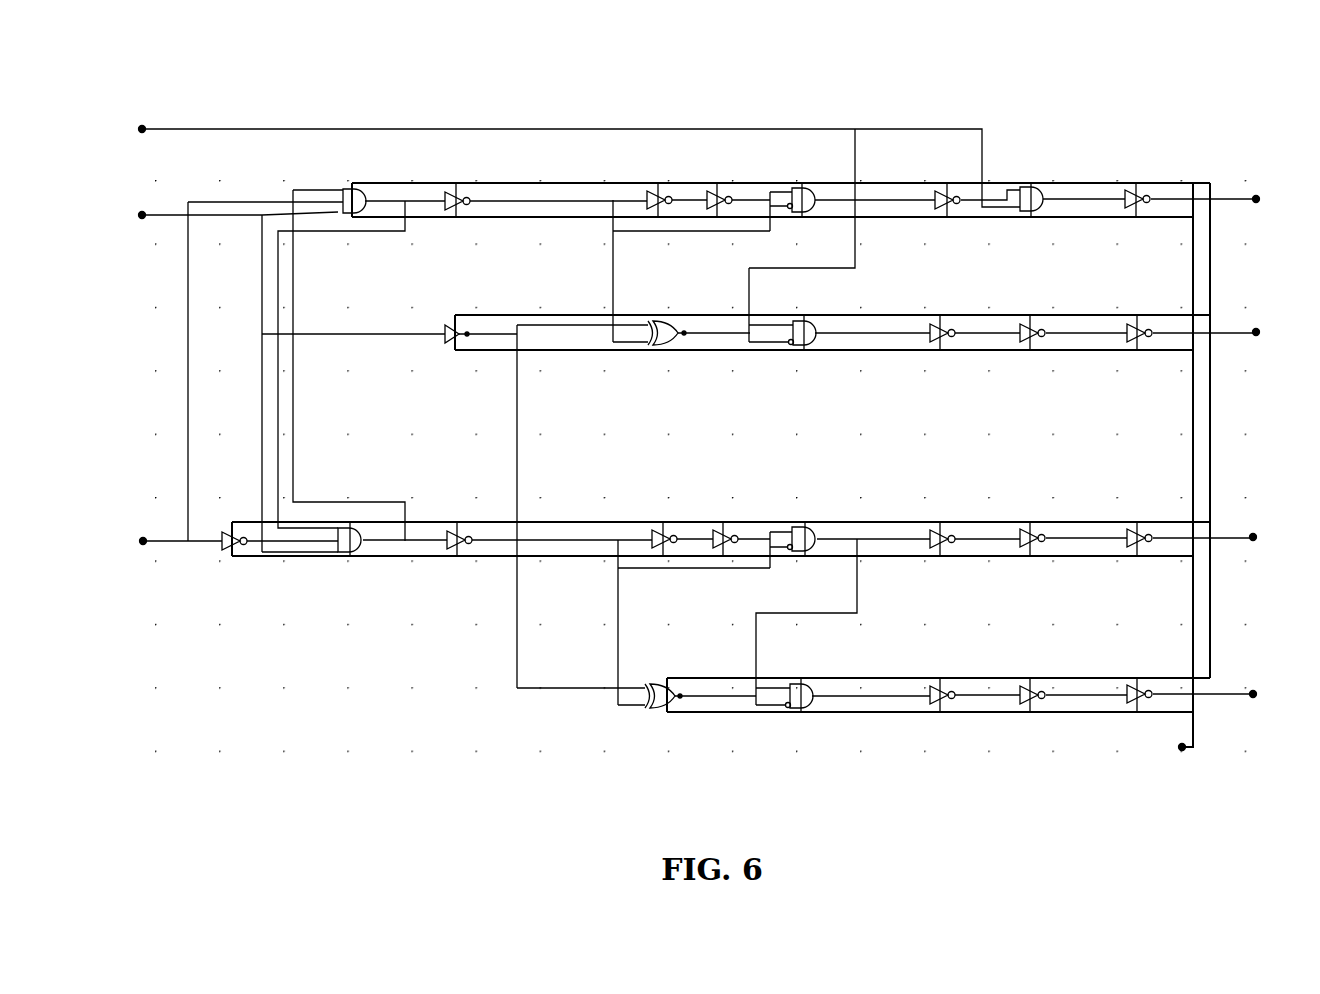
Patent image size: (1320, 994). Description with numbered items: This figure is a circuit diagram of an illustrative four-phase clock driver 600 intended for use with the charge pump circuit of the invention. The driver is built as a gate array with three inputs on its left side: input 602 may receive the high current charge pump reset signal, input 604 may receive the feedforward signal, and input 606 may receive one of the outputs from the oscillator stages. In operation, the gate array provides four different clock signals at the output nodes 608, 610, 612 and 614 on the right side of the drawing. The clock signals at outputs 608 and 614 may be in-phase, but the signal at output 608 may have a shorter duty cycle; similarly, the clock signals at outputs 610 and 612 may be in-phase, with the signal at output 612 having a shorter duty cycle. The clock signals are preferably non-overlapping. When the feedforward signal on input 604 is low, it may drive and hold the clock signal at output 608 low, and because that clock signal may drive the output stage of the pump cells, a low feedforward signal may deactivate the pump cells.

The four-phase clock driver 600 is at (1092, 137).
The input 602 is at (142, 216).
The input 604 is at (142, 128).
The input 606 is at (143, 540).
The output node 608 is at (1256, 198).
The output node 610 is at (1256, 331).
The output node 612 is at (1253, 536).
The output node 614 is at (1253, 693).